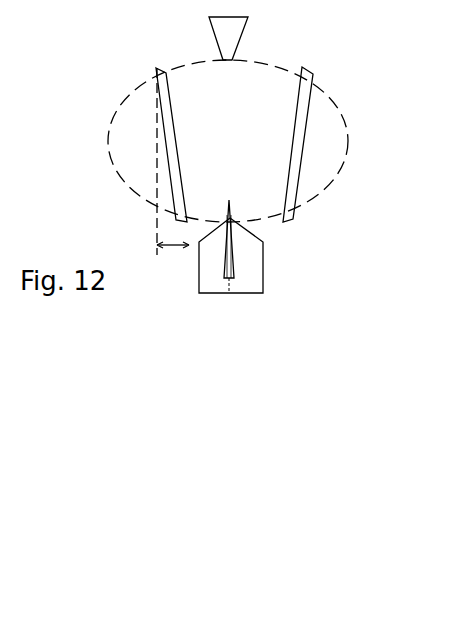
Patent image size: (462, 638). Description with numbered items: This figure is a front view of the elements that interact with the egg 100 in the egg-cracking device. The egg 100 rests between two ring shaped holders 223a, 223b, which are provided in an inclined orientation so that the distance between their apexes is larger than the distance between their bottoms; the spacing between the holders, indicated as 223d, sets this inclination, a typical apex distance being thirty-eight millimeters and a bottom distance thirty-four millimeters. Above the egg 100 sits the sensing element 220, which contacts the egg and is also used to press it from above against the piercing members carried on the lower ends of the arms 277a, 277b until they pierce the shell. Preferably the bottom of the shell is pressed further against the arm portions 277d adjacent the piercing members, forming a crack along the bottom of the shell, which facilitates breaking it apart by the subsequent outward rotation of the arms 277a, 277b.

The egg 100 is at (108, 143).
The sensing element 220 is at (236, 58).
The ring shaped holder 223a is at (167, 152).
The ring shaped holder 223b is at (297, 172).
The blade offset distance 223d is at (167, 245).
The arm 277a is at (210, 263).
The arm 277b is at (252, 266).
The arm portions 277d is at (258, 248).